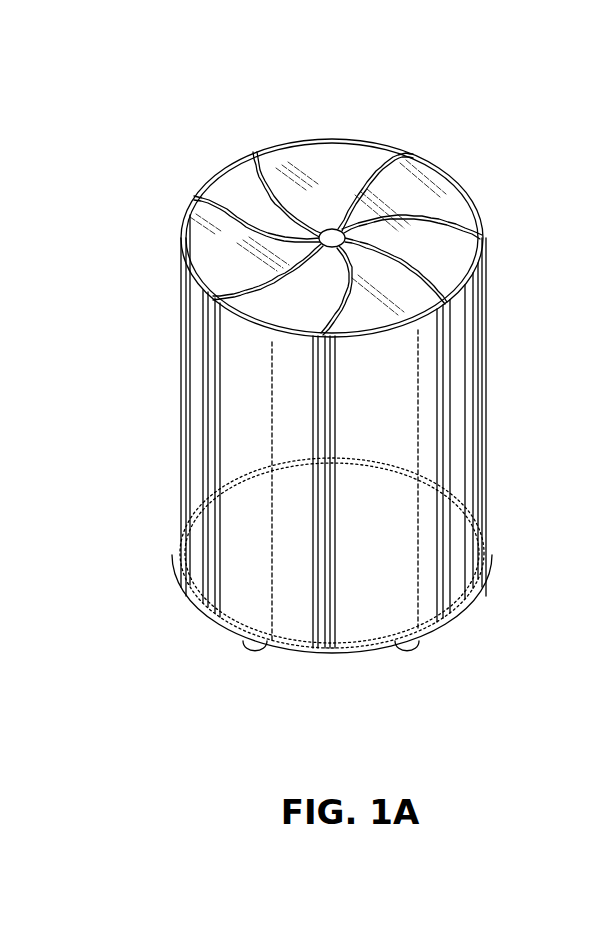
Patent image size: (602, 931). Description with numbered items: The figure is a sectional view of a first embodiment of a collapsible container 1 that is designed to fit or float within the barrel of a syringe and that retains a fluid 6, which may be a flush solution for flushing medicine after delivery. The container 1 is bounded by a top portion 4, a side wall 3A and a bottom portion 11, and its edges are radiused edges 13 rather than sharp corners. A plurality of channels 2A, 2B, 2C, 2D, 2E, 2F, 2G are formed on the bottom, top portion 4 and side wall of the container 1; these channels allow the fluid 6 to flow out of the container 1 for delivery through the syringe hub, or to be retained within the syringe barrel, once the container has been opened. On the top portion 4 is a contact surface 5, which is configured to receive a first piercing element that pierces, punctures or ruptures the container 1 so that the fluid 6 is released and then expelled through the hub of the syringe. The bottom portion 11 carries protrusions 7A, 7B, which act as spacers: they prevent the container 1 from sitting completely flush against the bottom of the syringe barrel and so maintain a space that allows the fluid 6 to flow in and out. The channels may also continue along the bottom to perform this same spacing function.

The collapsible container 1 is at (150, 213).
The channel 2A is at (440, 556).
The channel 2B is at (443, 197).
The channel 2C is at (382, 165).
The channel 2D is at (307, 143).
The channel 2E is at (187, 213).
The channel 2F is at (215, 606).
The channel 2G is at (325, 647).
The side wall 3A is at (193, 365).
The top portion 4 is at (420, 262).
The contact surface 5 is at (327, 230).
The fluid 6 is at (405, 432).
The protrusion 7A is at (255, 653).
The protrusion 7B is at (407, 653).
The bottom portion 11 is at (462, 612).
The radiused edges 13 is at (483, 277).